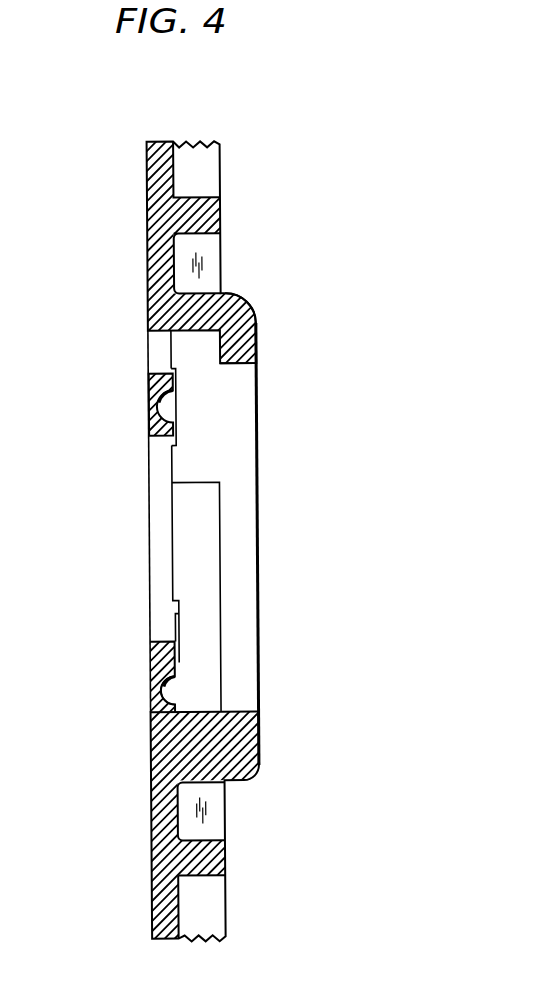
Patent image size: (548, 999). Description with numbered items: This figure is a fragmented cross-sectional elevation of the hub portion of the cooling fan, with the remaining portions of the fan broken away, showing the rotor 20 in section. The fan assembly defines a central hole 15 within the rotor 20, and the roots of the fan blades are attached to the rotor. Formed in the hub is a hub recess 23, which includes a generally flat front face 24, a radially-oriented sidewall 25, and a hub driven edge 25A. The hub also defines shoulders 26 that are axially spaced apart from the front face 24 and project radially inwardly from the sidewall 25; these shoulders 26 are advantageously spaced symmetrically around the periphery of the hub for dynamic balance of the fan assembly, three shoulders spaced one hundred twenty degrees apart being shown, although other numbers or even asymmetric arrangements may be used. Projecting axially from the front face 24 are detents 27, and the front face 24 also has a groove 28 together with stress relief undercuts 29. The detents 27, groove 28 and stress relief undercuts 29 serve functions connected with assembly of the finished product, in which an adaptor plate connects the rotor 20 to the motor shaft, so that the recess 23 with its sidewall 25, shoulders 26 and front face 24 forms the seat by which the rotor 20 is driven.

The central hole 15 is at (163, 641).
The rotor 20 is at (124, 662).
The hub recess 23 is at (243, 628).
The front face 24 is at (180, 665).
The sidewall 25 is at (149, 340).
The hub driven edge 25A is at (200, 478).
The shoulders 26 is at (258, 321).
The detents 27 is at (173, 426).
The groove 28 is at (170, 402).
The stress relief undercuts 29 is at (165, 688).